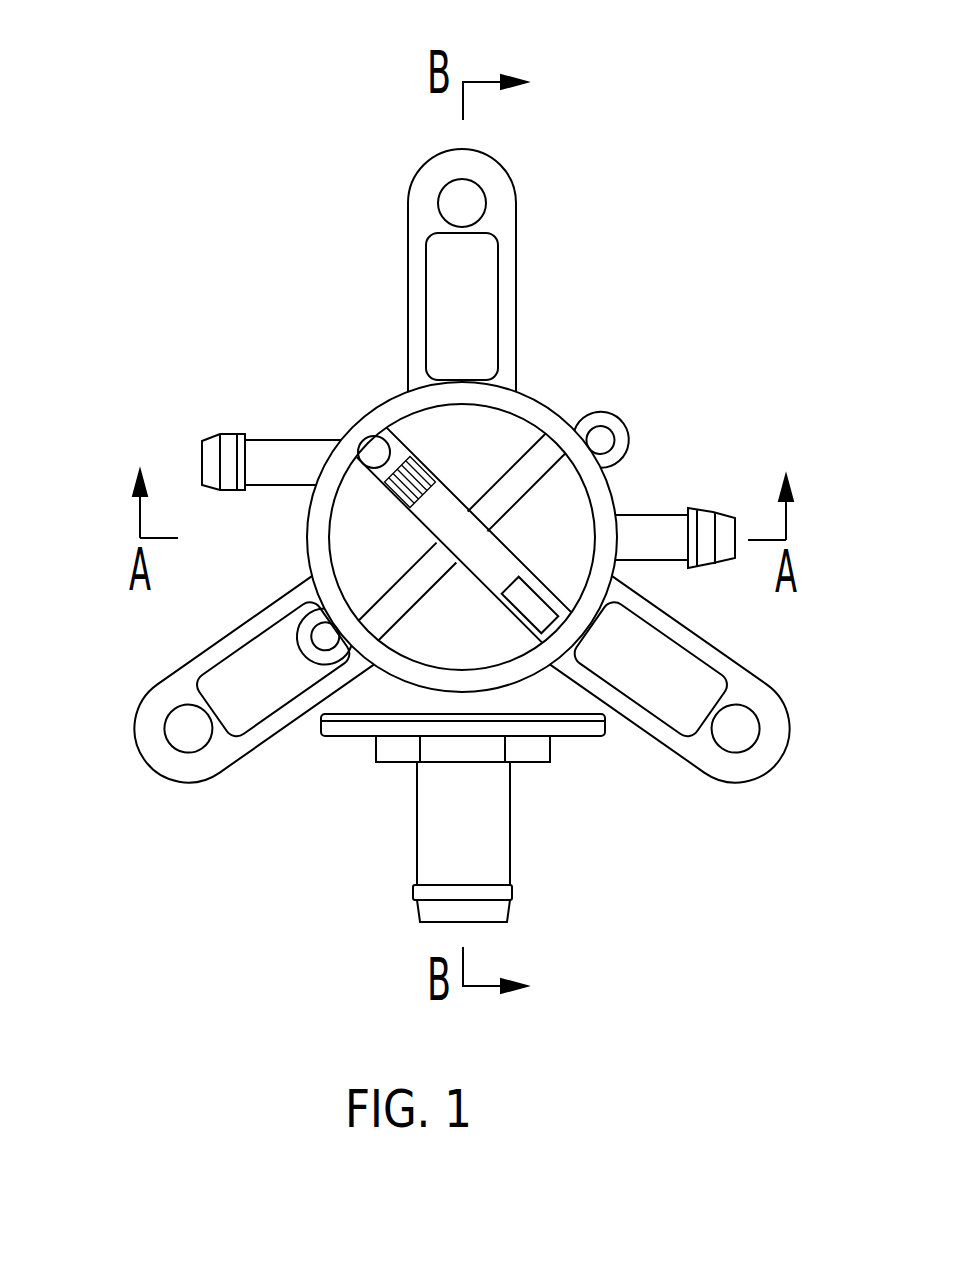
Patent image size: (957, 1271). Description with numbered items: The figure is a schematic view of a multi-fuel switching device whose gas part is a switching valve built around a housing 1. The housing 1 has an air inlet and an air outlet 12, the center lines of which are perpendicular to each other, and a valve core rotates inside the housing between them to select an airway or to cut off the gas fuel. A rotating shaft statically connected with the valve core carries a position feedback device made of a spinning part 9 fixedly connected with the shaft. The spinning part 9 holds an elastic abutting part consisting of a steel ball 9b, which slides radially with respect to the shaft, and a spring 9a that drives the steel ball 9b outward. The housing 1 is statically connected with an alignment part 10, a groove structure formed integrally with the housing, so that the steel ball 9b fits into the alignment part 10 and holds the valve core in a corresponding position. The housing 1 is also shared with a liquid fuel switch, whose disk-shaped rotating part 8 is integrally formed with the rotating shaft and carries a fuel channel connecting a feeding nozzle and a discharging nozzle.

The housing 1 is at (563, 398).
The rotating part 8 is at (432, 417).
The spinning part 9 is at (230, 361).
The spring 9a is at (367, 484).
The steel ball 9b is at (357, 429).
The alignment part 10 is at (288, 555).
The air outlet 12 is at (496, 840).